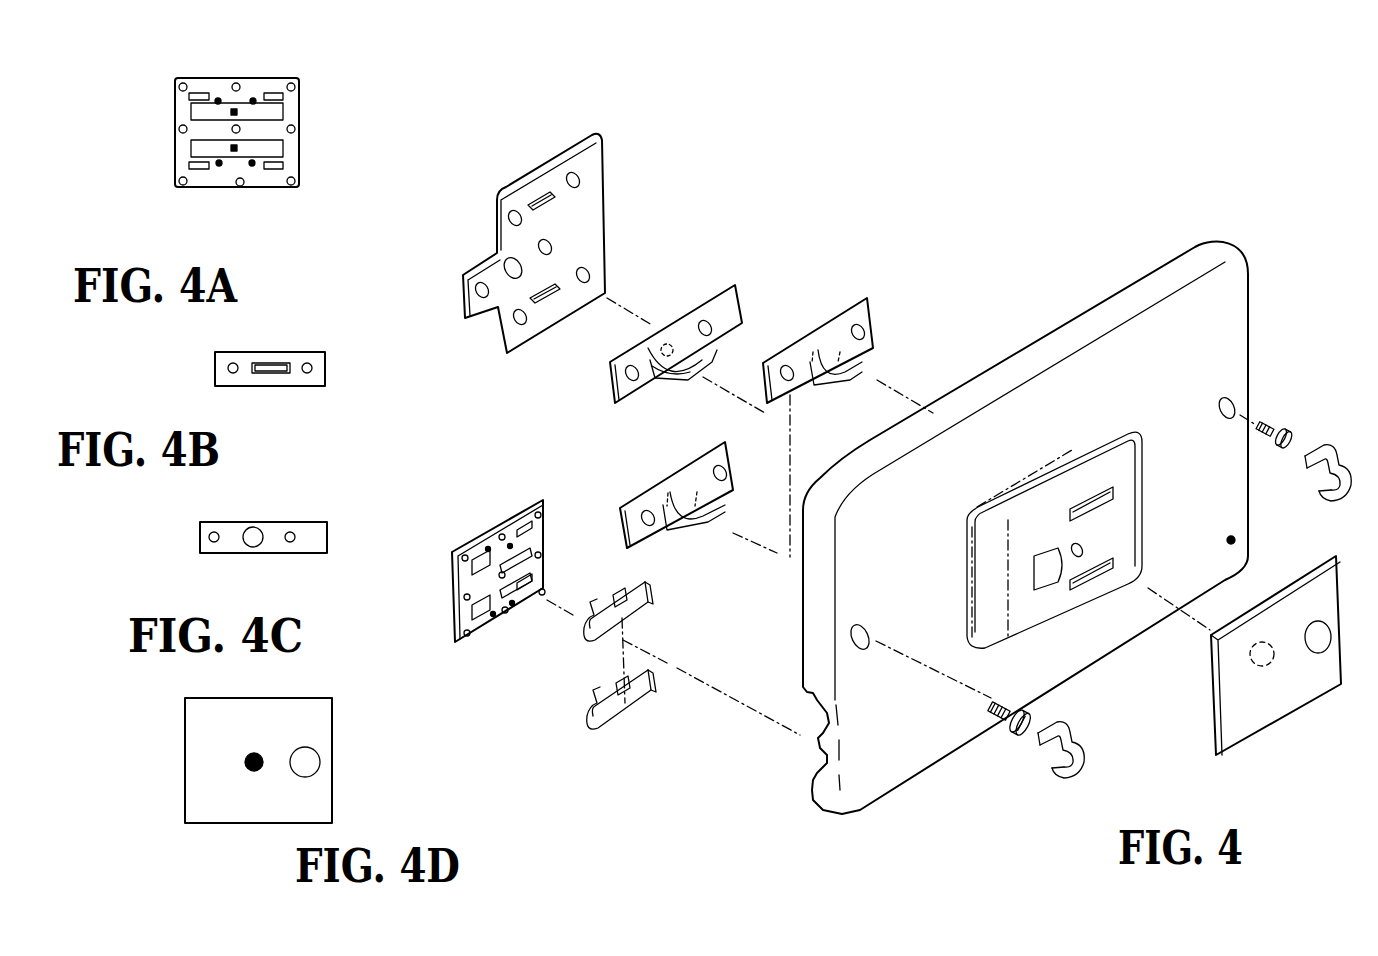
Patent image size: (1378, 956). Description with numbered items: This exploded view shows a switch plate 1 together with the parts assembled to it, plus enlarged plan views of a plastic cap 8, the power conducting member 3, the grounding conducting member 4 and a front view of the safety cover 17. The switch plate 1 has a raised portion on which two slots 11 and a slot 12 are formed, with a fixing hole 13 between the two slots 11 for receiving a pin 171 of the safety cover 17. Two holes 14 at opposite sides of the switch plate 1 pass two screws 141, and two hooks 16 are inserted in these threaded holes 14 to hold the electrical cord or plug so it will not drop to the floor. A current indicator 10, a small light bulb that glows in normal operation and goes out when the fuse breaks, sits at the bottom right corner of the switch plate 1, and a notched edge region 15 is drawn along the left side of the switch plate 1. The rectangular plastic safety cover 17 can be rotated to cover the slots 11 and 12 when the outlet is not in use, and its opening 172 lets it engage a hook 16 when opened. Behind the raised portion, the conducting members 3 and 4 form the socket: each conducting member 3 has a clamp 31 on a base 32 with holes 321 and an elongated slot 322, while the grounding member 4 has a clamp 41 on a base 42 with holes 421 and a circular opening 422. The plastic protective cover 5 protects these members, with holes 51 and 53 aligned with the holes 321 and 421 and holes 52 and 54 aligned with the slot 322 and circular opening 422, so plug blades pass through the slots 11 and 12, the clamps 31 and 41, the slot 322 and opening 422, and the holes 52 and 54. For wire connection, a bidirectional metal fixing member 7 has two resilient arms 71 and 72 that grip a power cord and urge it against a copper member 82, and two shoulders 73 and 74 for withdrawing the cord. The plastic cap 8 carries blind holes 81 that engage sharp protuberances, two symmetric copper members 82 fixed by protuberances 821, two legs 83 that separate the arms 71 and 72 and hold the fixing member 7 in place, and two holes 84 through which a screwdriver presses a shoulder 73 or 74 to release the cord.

In FIG. 4, the switch plate 1 is at (1248, 262).
In FIG. 4, the current indicator 10 is at (1237, 541).
In FIG. 4, the slots 11 is at (1087, 497).
In FIG. 4, the slot 12 is at (1048, 576).
In FIG. 4, the fixing hole 13 is at (1084, 550).
In FIG. 4, the holes 14 is at (852, 638).
In FIG. 4, the screws 141 is at (997, 728).
In FIG. 4, the notched edge 15 is at (810, 722).
In FIG. 4, the hooks 16 is at (1073, 777).
In FIG. 4D, the safety cover 17 is at (320, 710).
In FIG. 4, the safety cover 17 is at (1258, 658).
In FIG. 4D, the pin 171 is at (252, 771).
In FIG. 4, the pin 171 is at (1248, 670).
In FIG. 4D, the opening 172 is at (310, 763).
In FIG. 4, the opening 172 is at (1334, 612).
In FIG. 4B, the conducting member 3 is at (270, 370).
In FIG. 4, the conducting member 3 is at (748, 400).
In FIG. 4, the clamp 31 is at (866, 376).
In FIG. 4B, the base 32 is at (325, 354).
In FIG. 4, the base 32 is at (870, 315).
In FIG. 4B, the holes 321 is at (305, 361).
In FIG. 4, the holes 321 is at (788, 366).
In FIG. 4B, the elongated slot 322 is at (271, 374).
In FIG. 4, the elongated slot 322 is at (810, 370).
In FIG. 4C, the conducting member 4 is at (271, 528).
In FIG. 4, the conducting member 4 is at (665, 315).
In FIG. 4, the clamp 41 is at (697, 382).
In FIG. 4C, the base 42 is at (316, 544).
In FIG. 4, the base 42 is at (733, 323).
In FIG. 4C, the holes 421 is at (288, 530).
In FIG. 4, the holes 421 is at (660, 352).
In FIG. 4C, the circular opening 422 is at (253, 546).
In FIG. 4, the circular opening 422 is at (657, 368).
In FIG. 4, the plastic protective cover 5 is at (587, 132).
In FIG. 4, the holes 51 is at (514, 210).
In FIG. 4, the holes 52 is at (558, 290).
In FIG. 4, the holes 53 is at (508, 280).
In FIG. 4, the hole 54 is at (507, 262).
In FIG. 4, the bidirectional metal fixing member 7 is at (618, 662).
In FIG. 4, the resilient arm 71 is at (590, 607).
In FIG. 4, the resilient arm 72 is at (620, 590).
In FIG. 4, the shoulder 73 is at (584, 618).
In FIG. 4, the shoulder 74 is at (648, 580).
In FIG. 4A, the plastic cap 8 is at (268, 78).
In FIG. 4, the plastic cap 8 is at (517, 512).
In FIG. 4A, the blind holes 81 is at (179, 130).
In FIG. 4, the blind holes 81 is at (540, 517).
In FIG. 4A, the copper members 82 is at (191, 111).
In FIG. 4, the copper members 82 is at (532, 537).
In FIG. 4A, the protuberances 821 is at (252, 99).
In FIG. 4, the protuberances 821 is at (510, 545).
In FIG. 4A, the legs 83 is at (231, 113).
In FIG. 4, the legs 83 is at (510, 543).
In FIG. 4A, the holes 84 is at (198, 96).
In FIG. 4, the holes 84 is at (530, 585).